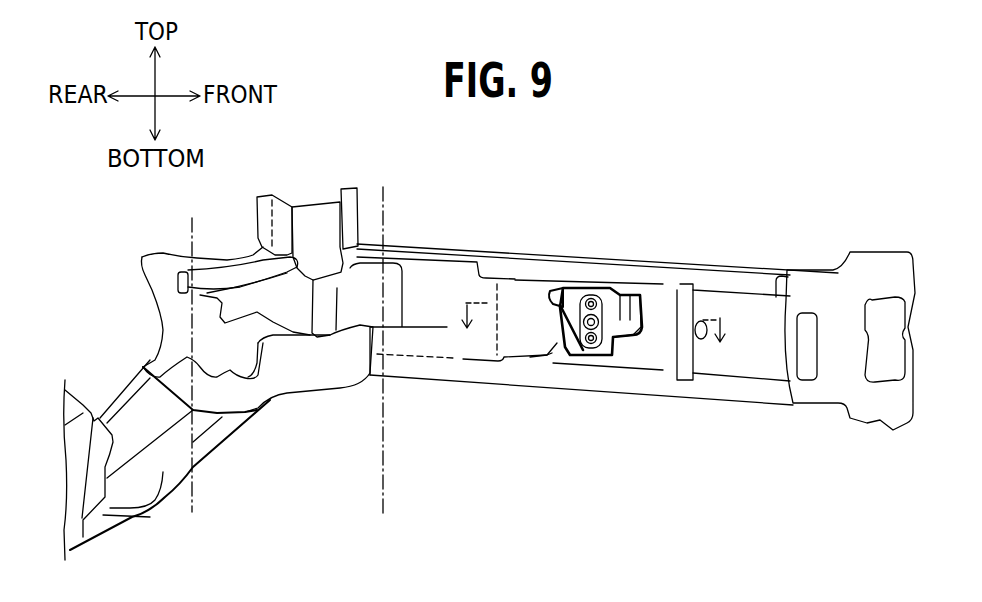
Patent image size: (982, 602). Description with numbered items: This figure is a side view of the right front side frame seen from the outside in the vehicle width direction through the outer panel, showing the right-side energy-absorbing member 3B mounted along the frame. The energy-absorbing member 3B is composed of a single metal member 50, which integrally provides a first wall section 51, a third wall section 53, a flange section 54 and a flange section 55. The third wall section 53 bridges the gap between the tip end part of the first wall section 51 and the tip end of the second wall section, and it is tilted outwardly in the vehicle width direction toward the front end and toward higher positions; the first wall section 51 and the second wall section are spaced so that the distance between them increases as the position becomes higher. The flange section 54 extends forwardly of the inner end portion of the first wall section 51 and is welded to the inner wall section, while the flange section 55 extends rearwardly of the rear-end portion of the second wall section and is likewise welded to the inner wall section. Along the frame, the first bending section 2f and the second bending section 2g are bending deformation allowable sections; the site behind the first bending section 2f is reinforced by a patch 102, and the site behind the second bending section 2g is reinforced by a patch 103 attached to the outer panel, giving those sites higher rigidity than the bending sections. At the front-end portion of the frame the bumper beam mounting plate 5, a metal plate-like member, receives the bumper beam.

The right-side energy-absorbing member 3B is at (676, 156).
The bumper beam mounting plate 5 is at (878, 277).
The member 50 is at (590, 251).
The first wall section 51 is at (622, 303).
The third wall section 53 is at (580, 287).
The flange section 54 is at (637, 297).
The flange section 55 is at (537, 273).
The patch 102 is at (308, 373).
The patch 103 is at (316, 218).
The first bending section 2f is at (383, 330).
The second bending section 2g is at (192, 346).